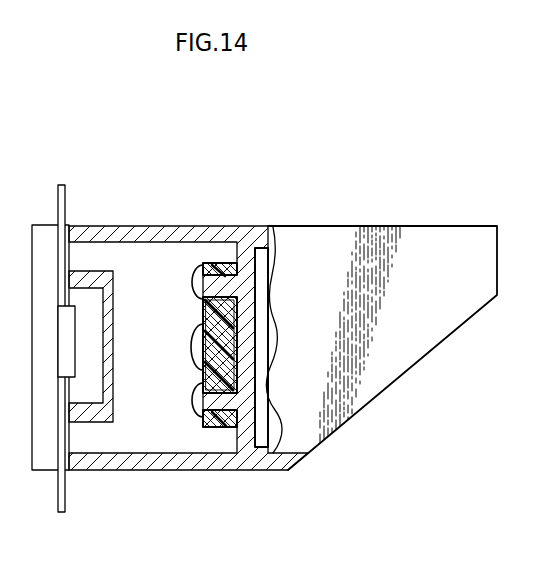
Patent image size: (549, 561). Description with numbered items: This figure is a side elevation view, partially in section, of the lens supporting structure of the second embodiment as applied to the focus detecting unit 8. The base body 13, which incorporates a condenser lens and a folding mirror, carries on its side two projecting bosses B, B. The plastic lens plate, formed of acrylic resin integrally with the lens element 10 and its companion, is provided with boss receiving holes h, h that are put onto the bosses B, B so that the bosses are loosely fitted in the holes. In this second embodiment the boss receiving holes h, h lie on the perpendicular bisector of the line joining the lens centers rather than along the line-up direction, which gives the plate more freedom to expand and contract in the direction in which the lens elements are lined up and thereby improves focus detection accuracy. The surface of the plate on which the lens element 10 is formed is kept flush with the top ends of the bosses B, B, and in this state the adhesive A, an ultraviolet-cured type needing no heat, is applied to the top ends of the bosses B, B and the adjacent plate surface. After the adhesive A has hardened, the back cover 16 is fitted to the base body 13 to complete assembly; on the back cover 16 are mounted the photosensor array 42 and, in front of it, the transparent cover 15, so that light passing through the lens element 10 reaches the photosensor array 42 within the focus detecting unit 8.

The focus detecting unit 8 is at (358, 416).
The plastic lens element 10 is at (194, 345).
The base body 13 is at (235, 225).
The transparent cover 15 is at (117, 302).
The back cover 16 is at (40, 458).
The photosensor array 42 is at (67, 353).
The adhesive A is at (199, 281).
The boss B is at (233, 288).
The boss receiving hole h is at (215, 265).